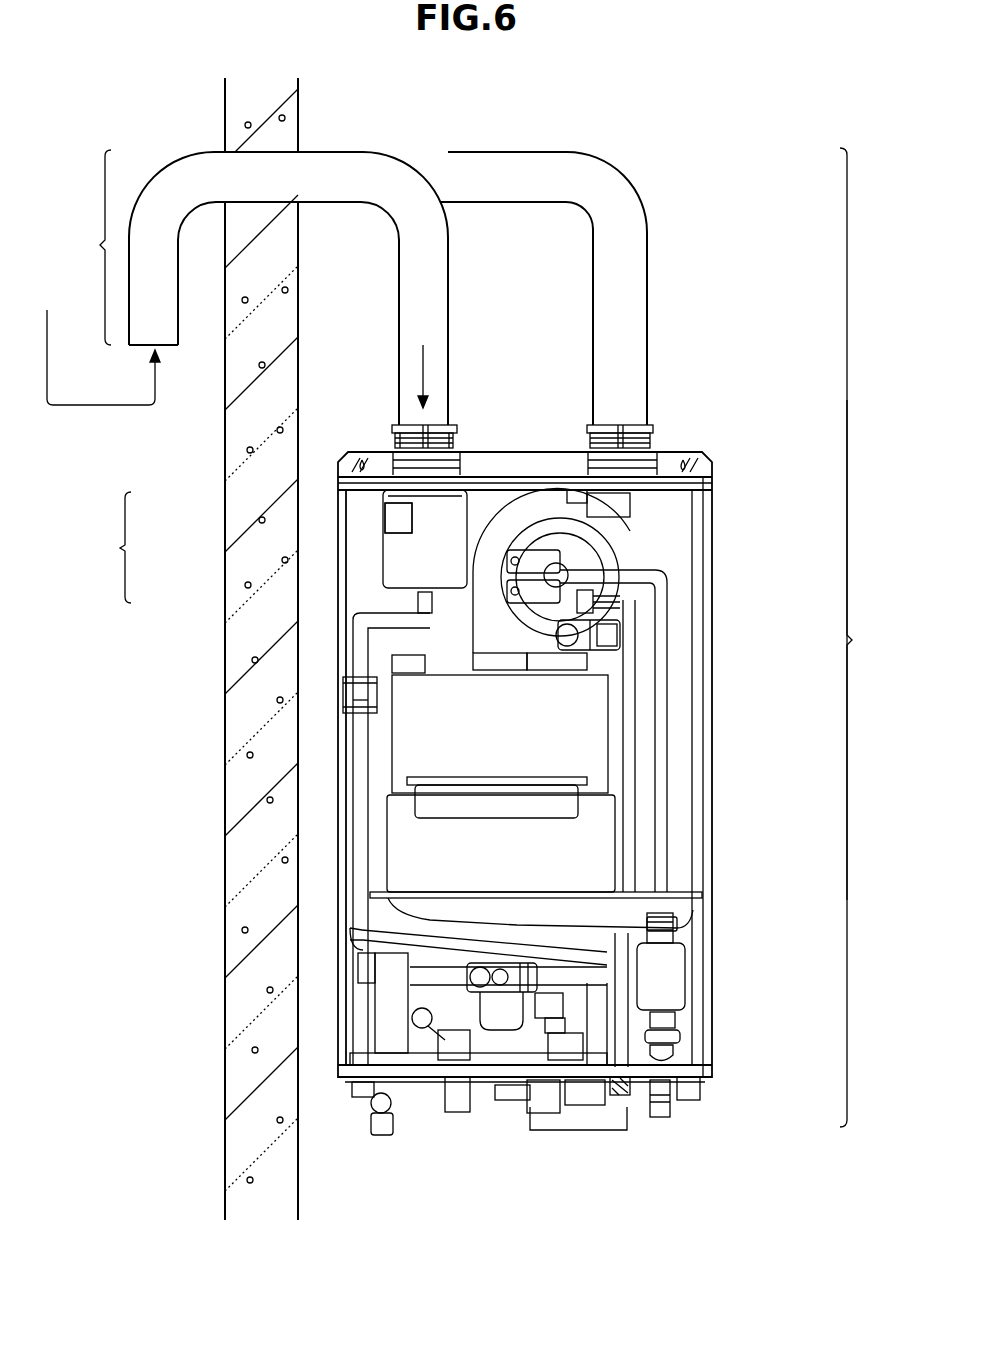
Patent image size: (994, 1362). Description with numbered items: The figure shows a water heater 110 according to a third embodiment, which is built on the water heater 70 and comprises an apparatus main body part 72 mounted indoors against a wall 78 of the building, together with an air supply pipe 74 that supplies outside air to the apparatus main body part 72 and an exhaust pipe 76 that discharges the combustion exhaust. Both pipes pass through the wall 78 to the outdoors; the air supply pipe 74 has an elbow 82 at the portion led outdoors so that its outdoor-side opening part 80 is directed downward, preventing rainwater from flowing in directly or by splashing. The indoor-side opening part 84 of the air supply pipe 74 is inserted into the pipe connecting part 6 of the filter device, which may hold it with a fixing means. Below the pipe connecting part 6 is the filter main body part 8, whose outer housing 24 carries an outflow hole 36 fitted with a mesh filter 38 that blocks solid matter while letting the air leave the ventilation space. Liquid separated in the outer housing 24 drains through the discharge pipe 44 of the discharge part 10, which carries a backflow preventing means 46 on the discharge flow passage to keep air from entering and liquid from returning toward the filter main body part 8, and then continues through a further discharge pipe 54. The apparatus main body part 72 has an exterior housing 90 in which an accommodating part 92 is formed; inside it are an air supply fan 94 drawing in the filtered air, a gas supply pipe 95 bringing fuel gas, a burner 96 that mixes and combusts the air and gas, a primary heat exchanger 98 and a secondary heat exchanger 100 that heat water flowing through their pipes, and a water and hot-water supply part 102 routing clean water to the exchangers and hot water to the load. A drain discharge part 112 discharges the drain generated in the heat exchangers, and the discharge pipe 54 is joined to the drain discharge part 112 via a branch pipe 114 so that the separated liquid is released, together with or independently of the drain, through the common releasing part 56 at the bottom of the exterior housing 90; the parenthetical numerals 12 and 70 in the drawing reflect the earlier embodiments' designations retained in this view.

The pipe connecting part 6 is at (392, 442).
The exhaust port 12 is at (391, 411).
The filter main body part 8 is at (115, 547).
The outflow hole 36 is at (388, 526).
The filter 38 is at (272, 526).
The outer housing 24 is at (387, 568).
The discharge pipe 44 is at (353, 640).
The backflow preventing means 46 is at (343, 690).
The discharge part 10 is at (250, 722).
The discharge pipe 54 is at (360, 920).
The releasing part 56 is at (615, 1097).
The apparatus main body part 72 is at (790, 452).
The air supply pipe 74 is at (333, 167).
The exhaust pipe 76 is at (535, 167).
The wall 78 is at (224, 456).
The outdoor-side opening part 80 is at (173, 348).
The elbow 82 is at (103, 277).
The indoor-side opening part 84 is at (458, 447).
The exterior housing 90 is at (712, 573).
The accommodating part 92 is at (703, 538).
The air supply fan 94 is at (640, 540).
The gas supply pipe 95 is at (663, 620).
The burner 96 is at (545, 680).
The primary heat exchanger 98 is at (597, 738).
The secondary heat exchanger 100 is at (597, 835).
The water and hot-water supply part 102 is at (578, 1148).
The water heater 110 is at (868, 637).
The water heater 70 is at (874, 650).
The drain discharge part 112 is at (677, 933).
The branch pipe 114 is at (655, 960).